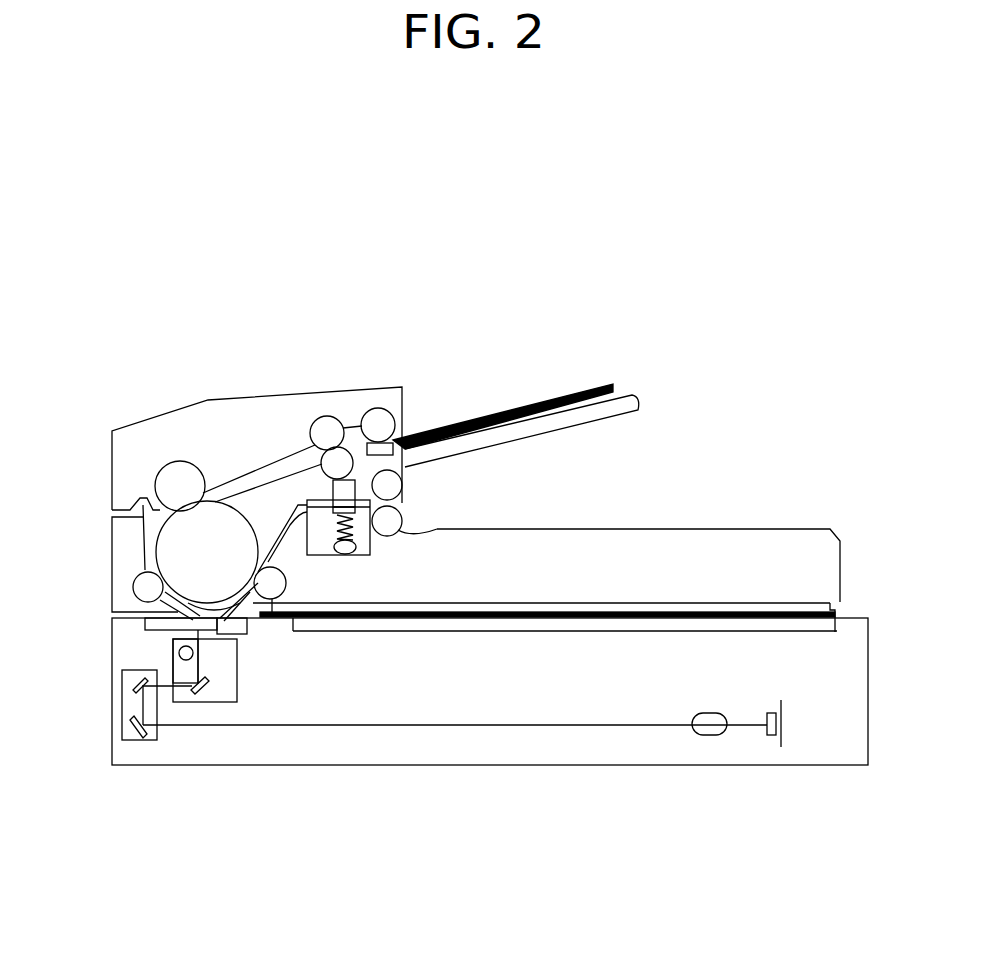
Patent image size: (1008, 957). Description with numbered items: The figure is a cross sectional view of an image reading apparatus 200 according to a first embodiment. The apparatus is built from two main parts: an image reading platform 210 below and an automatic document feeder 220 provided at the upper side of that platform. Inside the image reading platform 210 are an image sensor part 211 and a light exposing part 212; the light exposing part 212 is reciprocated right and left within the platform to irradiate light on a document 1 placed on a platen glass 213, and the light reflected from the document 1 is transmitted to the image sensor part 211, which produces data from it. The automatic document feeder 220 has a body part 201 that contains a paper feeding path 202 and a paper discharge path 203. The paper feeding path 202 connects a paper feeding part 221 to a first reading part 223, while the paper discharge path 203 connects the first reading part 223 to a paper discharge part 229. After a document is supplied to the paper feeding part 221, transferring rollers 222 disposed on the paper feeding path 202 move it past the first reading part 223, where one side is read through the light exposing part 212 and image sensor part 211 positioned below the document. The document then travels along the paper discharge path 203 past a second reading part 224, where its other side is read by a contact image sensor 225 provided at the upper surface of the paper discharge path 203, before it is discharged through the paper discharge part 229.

The image reading apparatus 200 is at (703, 279).
The automatic document feeder 220 is at (406, 367).
The image reading platform 210 is at (836, 773).
The body part 201 is at (130, 462).
The paper feeding path 202 is at (240, 482).
The paper discharge path 203 is at (282, 532).
The paper feeding part 221 is at (378, 408).
The transferring rollers 222 is at (327, 416).
The first reading part 223 is at (127, 610).
The second reading part 224 is at (383, 487).
The contact image sensor 225 is at (330, 492).
The paper discharge part 229 is at (401, 510).
The document 1 is at (660, 610).
The platen glass 213 is at (740, 624).
The light exposing part 212 is at (237, 686).
The image sensor part 211 is at (778, 746).